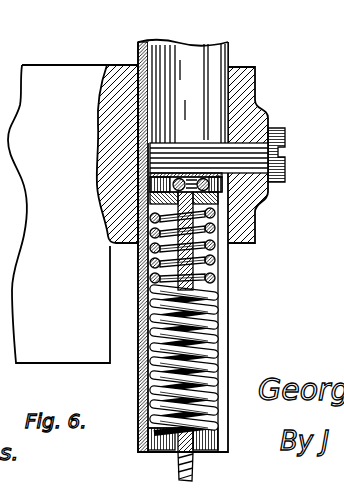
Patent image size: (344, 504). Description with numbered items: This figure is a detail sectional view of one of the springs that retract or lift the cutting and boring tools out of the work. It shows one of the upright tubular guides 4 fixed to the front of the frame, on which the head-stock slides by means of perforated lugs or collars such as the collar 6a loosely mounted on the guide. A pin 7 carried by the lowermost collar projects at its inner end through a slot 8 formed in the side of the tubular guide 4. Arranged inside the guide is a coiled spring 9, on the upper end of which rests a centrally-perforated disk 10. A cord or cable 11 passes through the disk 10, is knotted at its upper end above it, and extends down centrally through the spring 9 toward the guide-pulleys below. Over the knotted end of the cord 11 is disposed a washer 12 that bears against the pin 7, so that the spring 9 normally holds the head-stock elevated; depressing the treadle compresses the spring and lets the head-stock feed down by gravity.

The tubular guide 4 is at (193, 34).
The perforated lug or collar 6a is at (261, 144).
The pin 7 is at (208, 143).
The slot 8 is at (192, 247).
The coiled spring 9 is at (207, 343).
The centrally-perforated disk 10 is at (208, 186).
The cord or cable 11 is at (193, 250).
The washer 12 is at (227, 163).